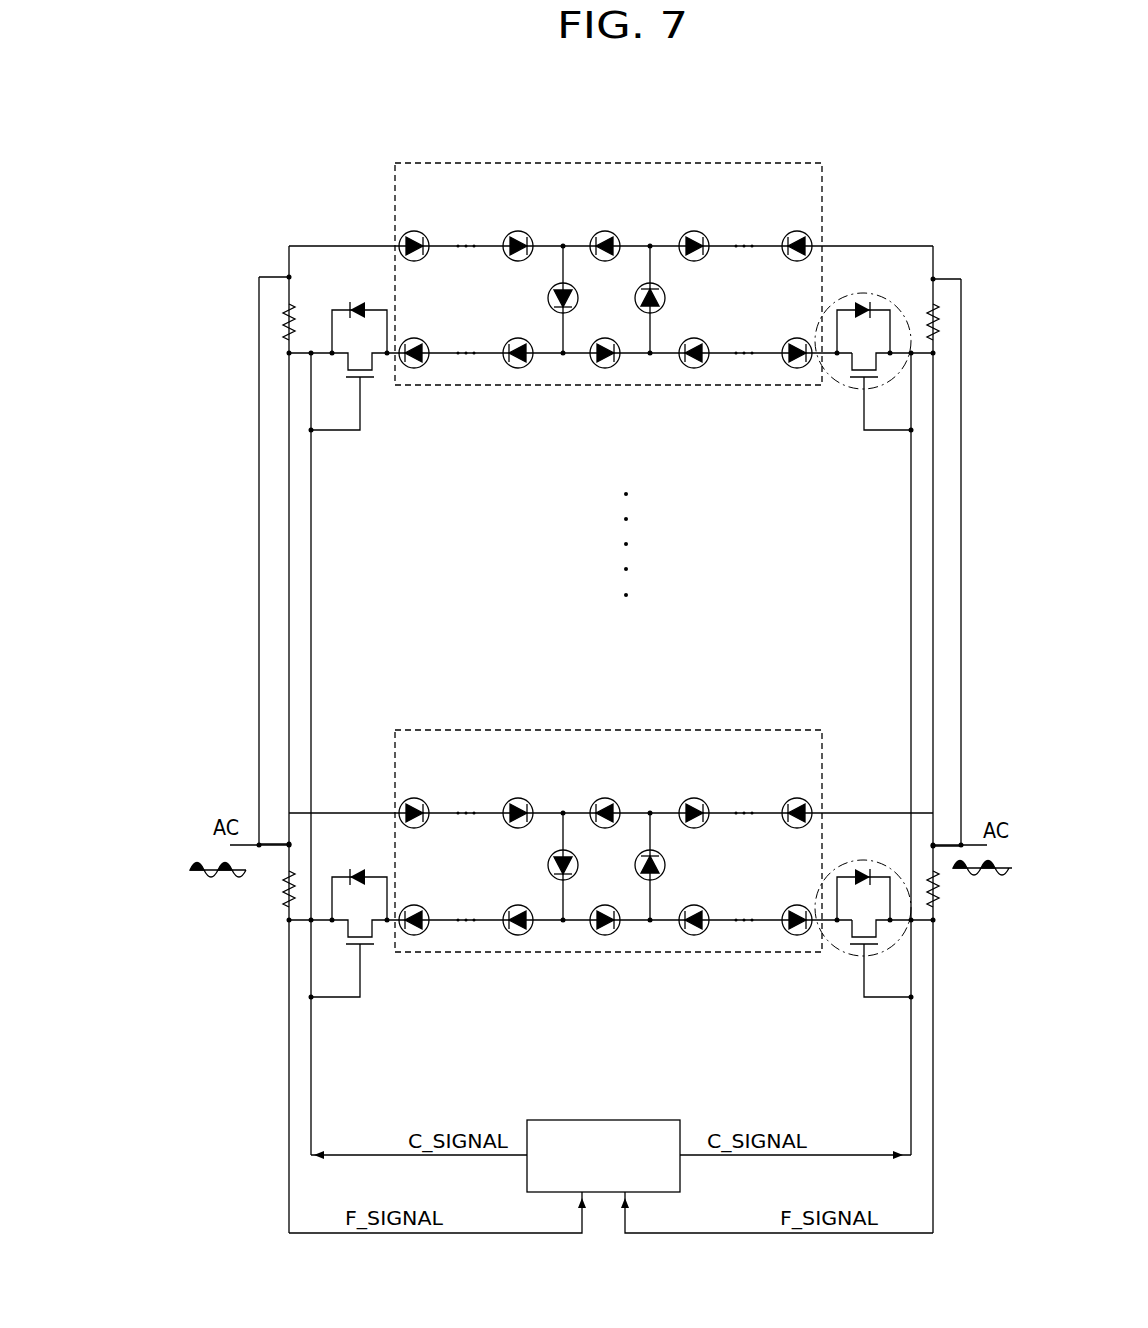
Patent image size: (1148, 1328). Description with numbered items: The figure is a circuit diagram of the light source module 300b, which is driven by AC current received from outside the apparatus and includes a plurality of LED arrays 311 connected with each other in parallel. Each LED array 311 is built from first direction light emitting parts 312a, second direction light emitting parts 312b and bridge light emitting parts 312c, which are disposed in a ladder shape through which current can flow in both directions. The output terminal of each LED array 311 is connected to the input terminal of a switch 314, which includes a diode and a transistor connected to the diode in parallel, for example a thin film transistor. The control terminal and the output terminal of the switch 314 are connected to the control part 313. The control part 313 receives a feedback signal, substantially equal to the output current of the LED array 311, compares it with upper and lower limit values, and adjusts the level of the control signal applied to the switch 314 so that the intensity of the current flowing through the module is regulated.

The light source module 300b is at (359, 160).
The LED array 311 is at (607, 163).
The first direction light emitting part 312a is at (515, 231).
The second direction light emitting part 312b is at (605, 231).
The bridge light emitting part 312c is at (548, 298).
The control part 313 is at (897, 375).
The switch 314 is at (897, 942).